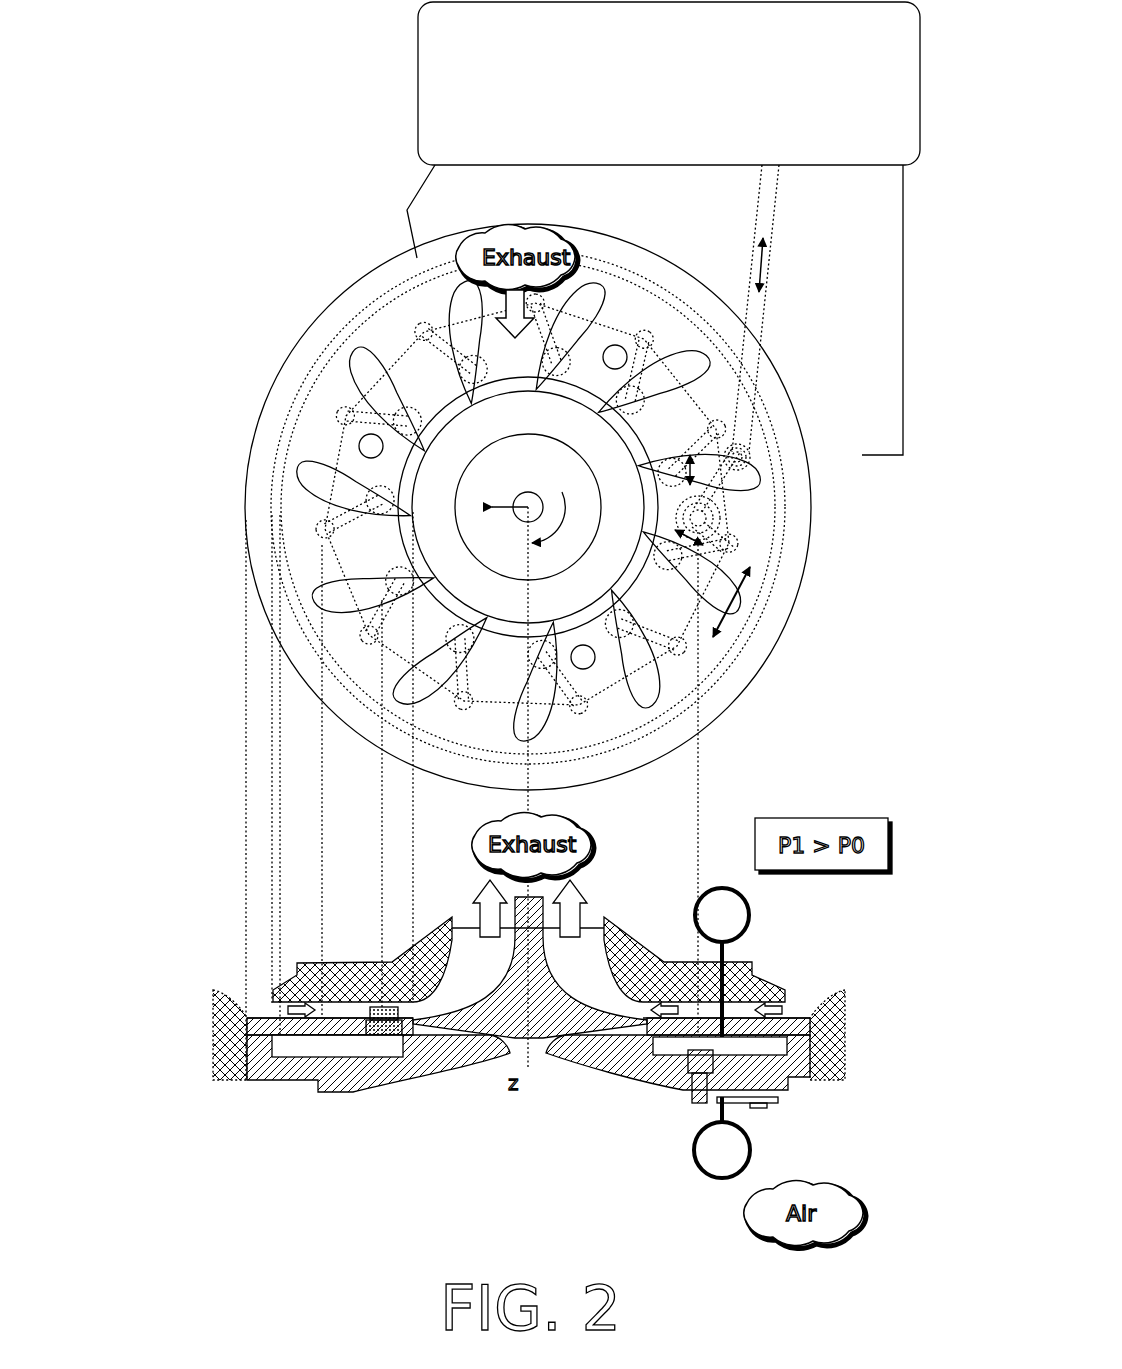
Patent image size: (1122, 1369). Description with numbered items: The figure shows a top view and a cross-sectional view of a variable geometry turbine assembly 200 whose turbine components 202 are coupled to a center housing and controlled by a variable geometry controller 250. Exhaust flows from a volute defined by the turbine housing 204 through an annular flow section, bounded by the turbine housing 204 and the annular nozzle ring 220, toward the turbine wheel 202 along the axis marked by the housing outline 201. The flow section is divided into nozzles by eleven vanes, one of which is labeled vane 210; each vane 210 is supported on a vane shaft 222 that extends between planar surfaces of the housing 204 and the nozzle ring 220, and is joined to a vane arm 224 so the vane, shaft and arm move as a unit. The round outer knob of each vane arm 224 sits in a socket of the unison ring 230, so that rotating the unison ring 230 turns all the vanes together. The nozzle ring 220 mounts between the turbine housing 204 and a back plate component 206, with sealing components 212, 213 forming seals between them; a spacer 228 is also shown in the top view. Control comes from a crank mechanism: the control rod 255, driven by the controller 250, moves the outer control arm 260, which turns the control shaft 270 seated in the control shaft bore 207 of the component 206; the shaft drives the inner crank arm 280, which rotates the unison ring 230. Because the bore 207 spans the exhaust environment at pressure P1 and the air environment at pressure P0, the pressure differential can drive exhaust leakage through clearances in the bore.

The assembly 200 is at (222, 60).
The turbine housing 201 is at (730, 700).
The turbine wheel 202 is at (270, 232).
The turbine housing 204 is at (293, 977).
The component 206 is at (397, 1087).
The control shaft bore 207 is at (680, 1090).
The vane 210 is at (375, 495).
The sealing component 212 is at (408, 1040).
The sealing component 213 is at (250, 1027).
The annular nozzle ring 220 is at (337, 477).
The vane shaft 222 is at (382, 1040).
The vane arm 224 is at (413, 522).
The spacer 228 is at (371, 446).
The unison ring 230 is at (760, 548).
The variable geometry controller 250 is at (663, 228).
The control rod 255 is at (757, 305).
The outer control arm 260 is at (750, 460).
The control shaft 270 is at (712, 518).
The inner crank arm 280 is at (720, 522).